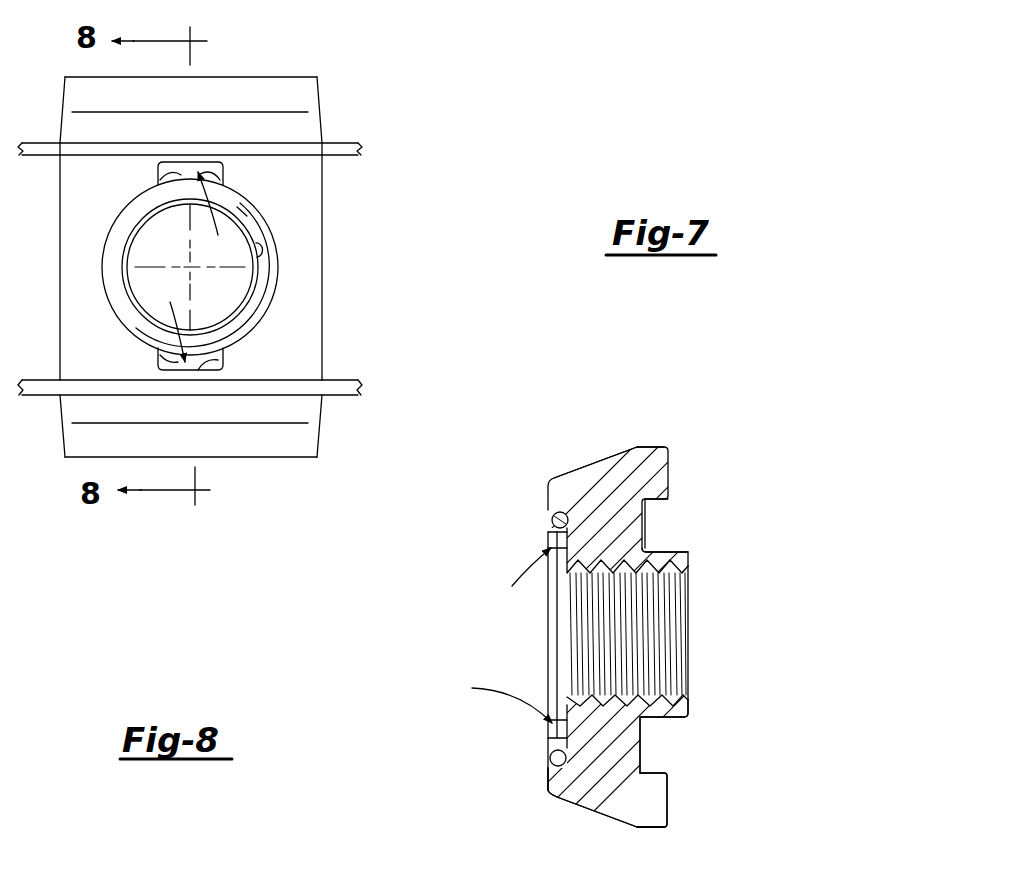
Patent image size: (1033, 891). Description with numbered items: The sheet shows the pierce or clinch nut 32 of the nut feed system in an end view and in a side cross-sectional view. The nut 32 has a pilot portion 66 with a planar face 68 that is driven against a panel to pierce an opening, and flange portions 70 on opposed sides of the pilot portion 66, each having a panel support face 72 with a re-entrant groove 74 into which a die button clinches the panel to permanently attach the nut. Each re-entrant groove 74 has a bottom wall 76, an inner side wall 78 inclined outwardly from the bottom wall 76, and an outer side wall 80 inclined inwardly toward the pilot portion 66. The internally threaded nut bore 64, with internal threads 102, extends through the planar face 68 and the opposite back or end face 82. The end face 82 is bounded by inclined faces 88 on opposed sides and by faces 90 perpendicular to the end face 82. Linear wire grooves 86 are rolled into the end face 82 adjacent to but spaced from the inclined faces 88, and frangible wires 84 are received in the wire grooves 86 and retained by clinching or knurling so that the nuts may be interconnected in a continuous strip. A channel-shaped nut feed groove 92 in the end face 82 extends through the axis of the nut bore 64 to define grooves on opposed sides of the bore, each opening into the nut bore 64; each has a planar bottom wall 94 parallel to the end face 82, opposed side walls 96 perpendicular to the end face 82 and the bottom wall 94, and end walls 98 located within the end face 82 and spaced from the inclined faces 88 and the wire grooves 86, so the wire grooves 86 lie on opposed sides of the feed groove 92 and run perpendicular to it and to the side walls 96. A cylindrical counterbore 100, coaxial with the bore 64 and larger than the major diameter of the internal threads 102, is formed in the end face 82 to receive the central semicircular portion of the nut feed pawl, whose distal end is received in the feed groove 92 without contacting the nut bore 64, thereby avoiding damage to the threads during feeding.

In FIG. 7, the nut 32 is at (580, 428).
In FIG. 8, the nut bore 64 is at (262, 256).
In FIG. 7, the nut bore 64 is at (690, 620).
In FIG. 7, the pilot portion 66 is at (690, 552).
In FIG. 7, the planar face 68 is at (690, 707).
In FIG. 7, the flange portions 70 is at (660, 448).
In FIG. 7, the panel support face 72 is at (668, 800).
In FIG. 7, the re-entrant grooves 74 is at (660, 513).
In FIG. 7, the bottom wall 76 is at (642, 745).
In FIG. 7, the inner side wall 78 is at (655, 548).
In FIG. 7, the outer side wall 80 is at (656, 766).
In FIG. 8, the end face 82 is at (70, 240).
In FIG. 7, the end face 82 is at (545, 775).
In FIG. 8, the frangible wires 84 is at (343, 142).
In FIG. 7, the frangible wires 84 is at (550, 758).
In FIG. 8, the linear wire grooves 86 is at (112, 152).
In FIG. 7, the linear wire grooves 86 is at (552, 518).
In FIG. 8, the inclined faces 88 is at (270, 455).
In FIG. 7, the inclined faces 88 is at (585, 462).
In FIG. 8, the faces 90 is at (245, 76).
In FIG. 7, the faces 90 is at (648, 828).
In FIG. 8, the nut feed groove 92 is at (193, 267).
In FIG. 7, the nut feed groove 92 is at (499, 635).
In FIG. 8, the bottom wall 94 is at (160, 360).
In FIG. 8, the side walls 96 is at (208, 180).
In FIG. 8, the end walls 98 is at (225, 366).
In FIG. 8, the counterbore 100 is at (136, 208).
In FIG. 7, the counterbore 100 is at (553, 640).
In FIG. 7, the internal threads 102 is at (683, 652).